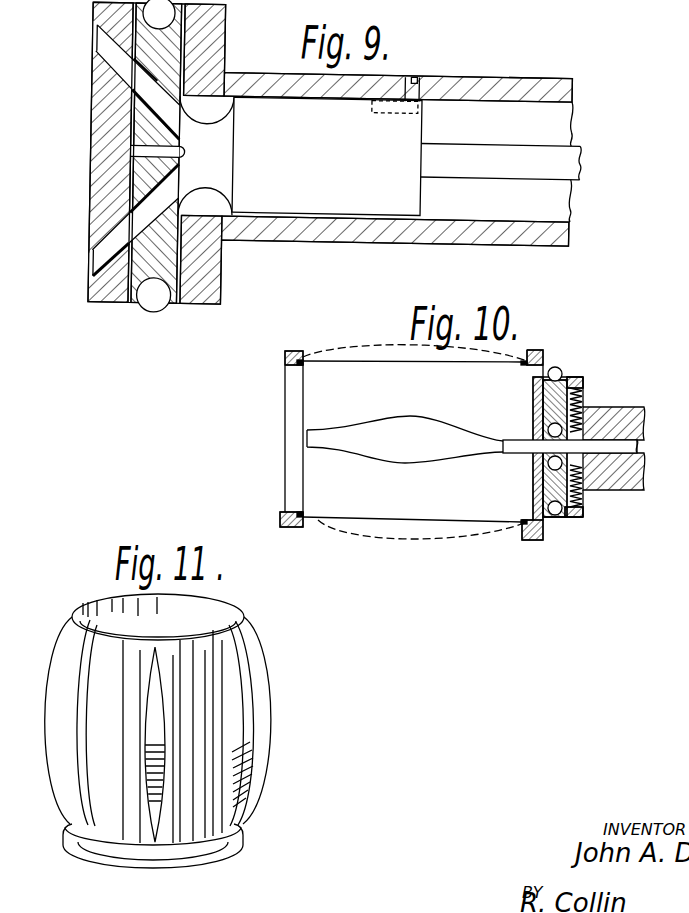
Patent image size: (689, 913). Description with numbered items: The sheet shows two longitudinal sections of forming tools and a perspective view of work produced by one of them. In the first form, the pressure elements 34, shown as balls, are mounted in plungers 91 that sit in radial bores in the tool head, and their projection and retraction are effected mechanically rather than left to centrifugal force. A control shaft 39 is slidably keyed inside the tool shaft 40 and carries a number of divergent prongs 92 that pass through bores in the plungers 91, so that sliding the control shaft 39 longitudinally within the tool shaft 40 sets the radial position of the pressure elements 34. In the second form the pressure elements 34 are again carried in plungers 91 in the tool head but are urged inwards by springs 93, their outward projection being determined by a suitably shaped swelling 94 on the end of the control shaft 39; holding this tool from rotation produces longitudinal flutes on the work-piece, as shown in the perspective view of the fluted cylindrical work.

In FIG. 9, the plunger 91 is at (167, 56).
In FIG. 10, the plunger 91 is at (574, 381).
In FIG. 9, the divergent prong 92 is at (116, 254).
In FIG. 9, the pressure element 34 is at (158, 296).
In FIG. 10, the pressure element 34 is at (556, 516).
In FIG. 9, the control shaft 39 is at (310, 196).
In FIG. 10, the control shaft 39 is at (623, 448).
In FIG. 9, the tool shaft 40 is at (382, 234).
In FIG. 10, the spring 93 is at (578, 403).
In FIG. 10, the swelling 94 is at (402, 448).